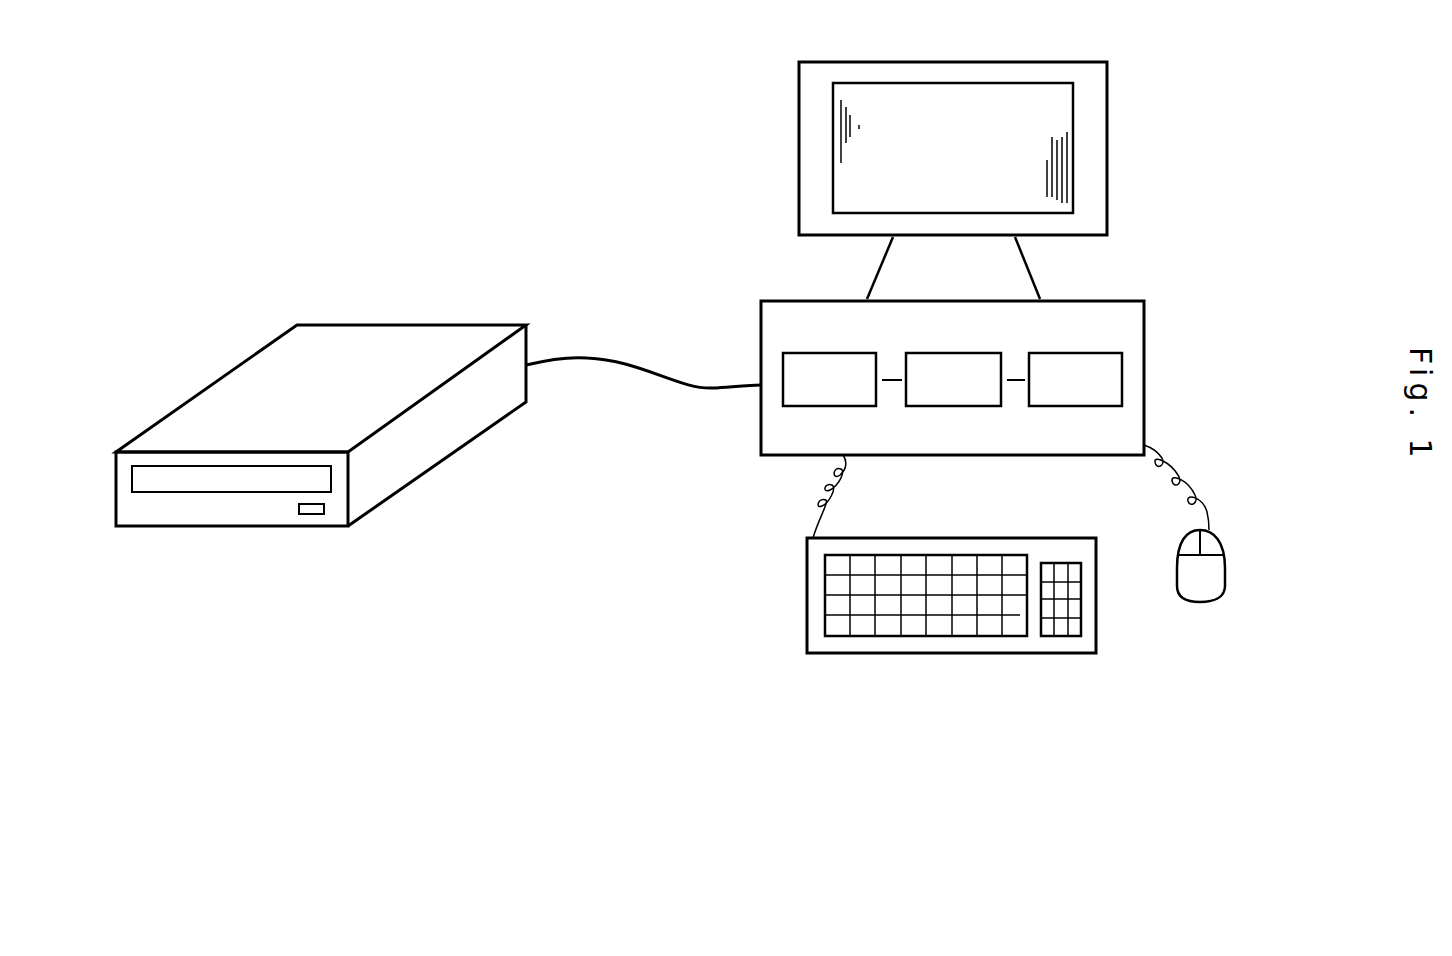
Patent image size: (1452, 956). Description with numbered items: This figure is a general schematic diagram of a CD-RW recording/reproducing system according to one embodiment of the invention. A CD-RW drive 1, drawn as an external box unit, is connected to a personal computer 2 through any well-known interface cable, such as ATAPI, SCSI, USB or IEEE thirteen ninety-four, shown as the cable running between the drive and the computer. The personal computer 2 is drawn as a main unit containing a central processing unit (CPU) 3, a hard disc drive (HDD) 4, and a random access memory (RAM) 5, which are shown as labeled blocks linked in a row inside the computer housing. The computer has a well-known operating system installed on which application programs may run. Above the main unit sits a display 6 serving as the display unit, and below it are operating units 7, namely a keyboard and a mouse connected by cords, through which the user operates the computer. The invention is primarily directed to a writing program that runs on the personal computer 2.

The CD-RW drive 1 is at (458, 325).
The personal computer 2 is at (985, 388).
The central processing unit (CPU) 3 is at (993, 406).
The hard disc drive (HDD) 4 is at (1122, 382).
The random access memory (RAM) 5 is at (783, 365).
The display 6 is at (1108, 107).
The operating units 7 is at (1307, 593).